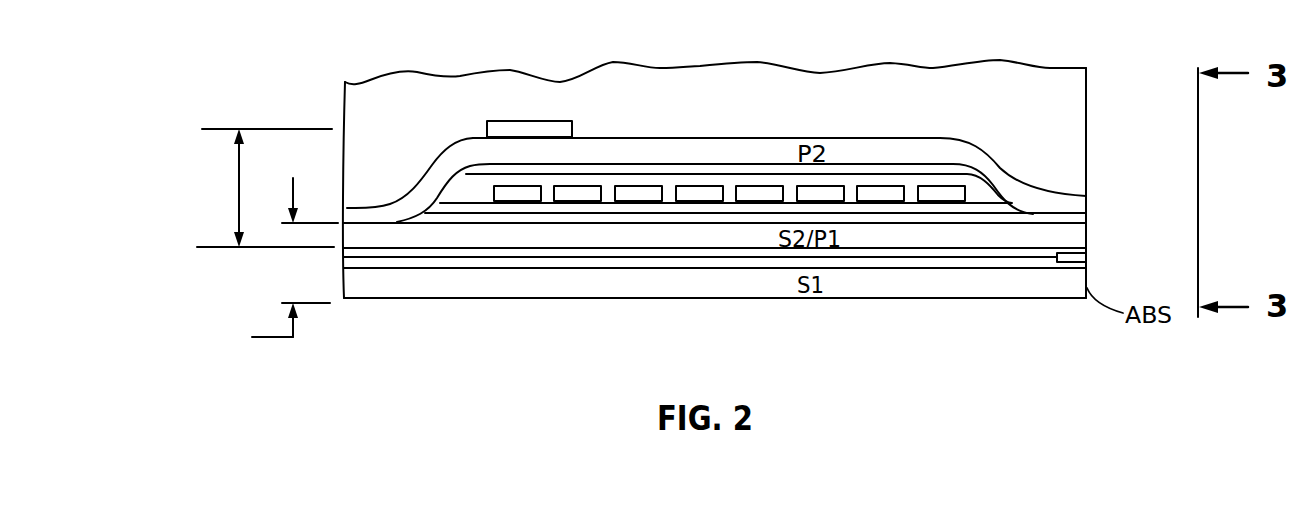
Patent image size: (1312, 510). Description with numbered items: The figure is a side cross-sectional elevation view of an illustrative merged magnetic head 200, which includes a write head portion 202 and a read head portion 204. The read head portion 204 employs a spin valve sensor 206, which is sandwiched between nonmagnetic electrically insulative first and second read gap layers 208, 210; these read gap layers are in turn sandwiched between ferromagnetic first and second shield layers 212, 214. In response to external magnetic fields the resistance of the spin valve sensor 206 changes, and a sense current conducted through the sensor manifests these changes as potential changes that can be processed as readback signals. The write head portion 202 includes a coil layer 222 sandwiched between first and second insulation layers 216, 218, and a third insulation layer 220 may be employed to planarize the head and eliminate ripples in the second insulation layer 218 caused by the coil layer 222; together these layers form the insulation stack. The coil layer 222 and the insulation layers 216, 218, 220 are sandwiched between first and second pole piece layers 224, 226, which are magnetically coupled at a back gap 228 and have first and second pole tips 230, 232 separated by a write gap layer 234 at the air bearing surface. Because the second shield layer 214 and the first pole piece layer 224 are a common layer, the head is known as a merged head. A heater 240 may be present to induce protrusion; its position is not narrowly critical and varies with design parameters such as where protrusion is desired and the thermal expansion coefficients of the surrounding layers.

The merged magnetic head 200 is at (308, 91).
The write head portion 202 is at (227, 188).
The read head portion 204 is at (238, 347).
The spin valve sensor 206 is at (1087, 257).
The first read gap layer 208 is at (775, 268).
The second read gap layer 210 is at (733, 243).
The first shield layer 212 is at (843, 285).
The second shield layer 214 is at (938, 238).
The first insulation layer 216 is at (645, 208).
The second insulation layer 218 is at (975, 192).
The third insulation layer 220 is at (612, 163).
The coil layer 222 is at (757, 193).
The first pole piece layer 224 is at (935, 325).
The second pole piece layer 226 is at (858, 150).
The back gap 228 is at (382, 220).
The first pole tip 230 is at (1082, 237).
The second pole tip 232 is at (1080, 205).
The write gap layer 234 is at (1082, 220).
The heater 240 is at (517, 120).